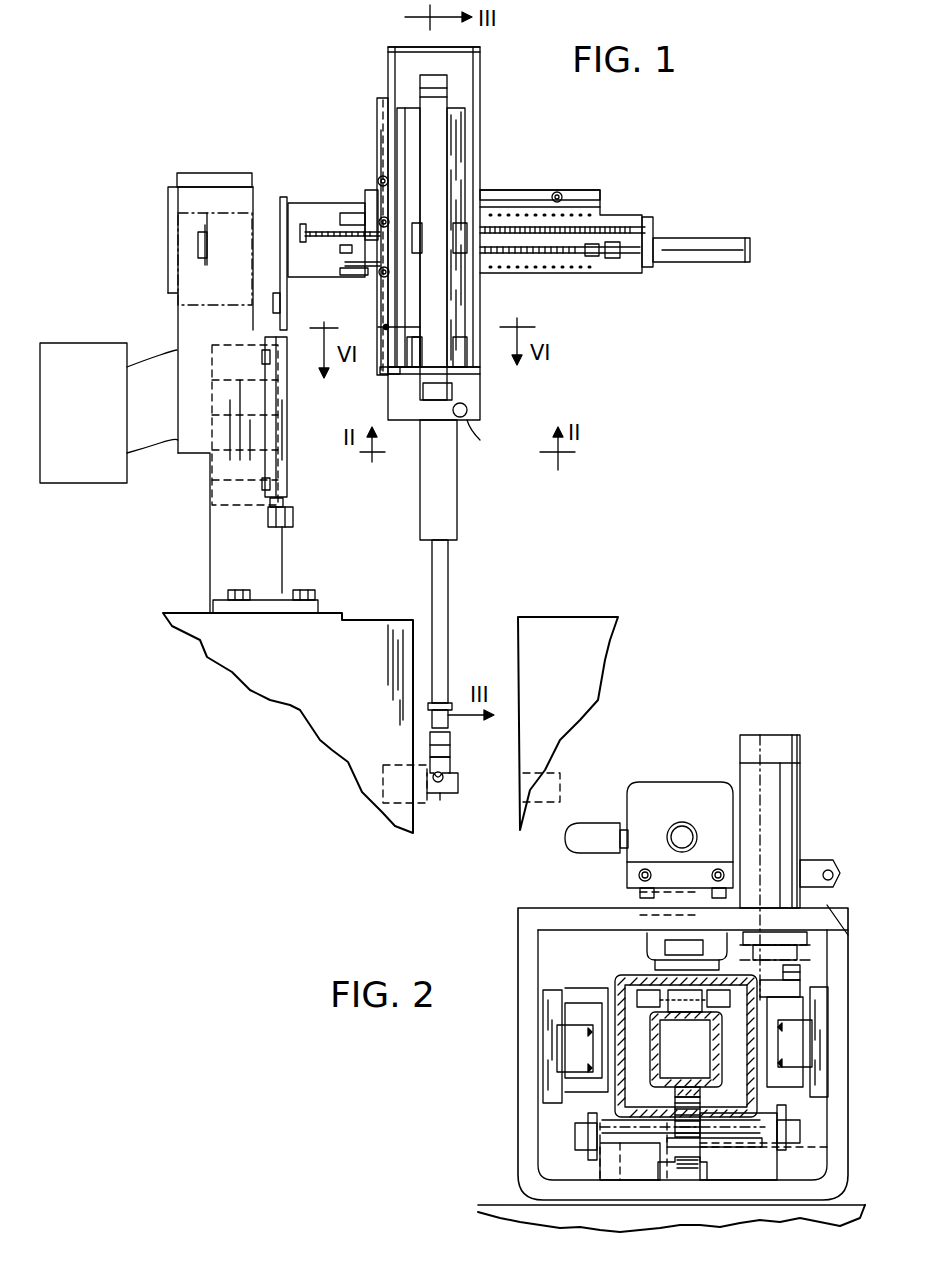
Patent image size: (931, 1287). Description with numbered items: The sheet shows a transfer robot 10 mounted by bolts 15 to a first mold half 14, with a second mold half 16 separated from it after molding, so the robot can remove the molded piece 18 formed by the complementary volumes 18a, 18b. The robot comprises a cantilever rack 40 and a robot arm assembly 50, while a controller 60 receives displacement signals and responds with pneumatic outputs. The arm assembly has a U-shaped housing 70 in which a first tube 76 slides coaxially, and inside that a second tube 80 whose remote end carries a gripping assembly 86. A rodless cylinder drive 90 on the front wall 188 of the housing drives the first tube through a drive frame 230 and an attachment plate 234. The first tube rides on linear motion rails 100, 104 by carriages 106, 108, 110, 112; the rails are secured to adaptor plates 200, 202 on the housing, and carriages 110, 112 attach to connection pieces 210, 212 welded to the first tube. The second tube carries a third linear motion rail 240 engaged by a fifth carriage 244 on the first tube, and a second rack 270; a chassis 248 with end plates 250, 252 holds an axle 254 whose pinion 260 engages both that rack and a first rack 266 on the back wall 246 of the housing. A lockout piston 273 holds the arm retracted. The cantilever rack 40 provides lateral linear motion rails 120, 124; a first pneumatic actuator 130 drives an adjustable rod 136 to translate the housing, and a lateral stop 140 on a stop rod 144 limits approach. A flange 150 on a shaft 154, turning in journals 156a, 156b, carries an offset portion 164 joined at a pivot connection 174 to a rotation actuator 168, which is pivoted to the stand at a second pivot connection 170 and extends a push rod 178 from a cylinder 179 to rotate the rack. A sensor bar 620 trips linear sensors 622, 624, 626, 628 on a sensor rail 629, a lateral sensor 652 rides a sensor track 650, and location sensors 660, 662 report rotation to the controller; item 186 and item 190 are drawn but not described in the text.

In FIG. 1, the transfer robot 10 is at (190, 100).
In FIG. 1, the first mold half 14 is at (340, 613).
In FIG. 1, the bolts 15 is at (215, 590).
In FIG. 1, the second mold half 16 is at (575, 617).
In FIG. 1, the molded piece 18 is at (445, 795).
In FIG. 1, the complementary volume 18a is at (400, 765).
In FIG. 1, the complementary volume 18b is at (530, 768).
In FIG. 1, the cantilever rack 40 is at (612, 178).
In FIG. 1, the robot arm assembly 50 is at (480, 118).
In FIG. 1, the controller 60 is at (82, 343).
In FIG. 1, the housing 70 is at (480, 55).
In FIG. 2, the housing 70 is at (848, 1065).
In FIG. 1, the first tube 76 is at (457, 487).
In FIG. 2, the first tube 76 is at (620, 975).
In FIG. 1, the second tube 80 is at (448, 600).
In FIG. 2, the second tube 80 is at (620, 1110).
In FIG. 1, the gripping assembly 86 is at (450, 742).
In FIG. 1, the rodless cylinder drive 90 is at (440, 170).
In FIG. 2, the rodless cylinder drive 90 is at (672, 782).
In FIG. 1, the linear motion rail 100 is at (392, 108).
In FIG. 2, the linear motion rail 100 is at (567, 1045).
In FIG. 1, the linear motion rail 104 is at (448, 112).
In FIG. 2, the linear motion rail 104 is at (822, 1030).
In FIG. 1, the carriage 106 is at (405, 240).
In FIG. 1, the carriage 108 is at (467, 245).
In FIG. 1, the carriage 110 is at (396, 393).
In FIG. 2, the carriage 110 is at (575, 1012).
In FIG. 1, the carriage 112 is at (480, 377).
In FIG. 2, the carriage 112 is at (800, 1020).
In FIG. 1, the lateral linear motion rail 120 is at (608, 213).
In FIG. 1, the lateral linear motion rail 124 is at (610, 275).
In FIG. 1, the first pneumatic actuator 130 is at (692, 238).
In FIG. 1, the adjustable rod 136 is at (537, 255).
In FIG. 1, the lateral stop 140 is at (370, 228).
In FIG. 1, the stop rod 144 is at (645, 225).
In FIG. 1, the flange 150 is at (285, 197).
In FIG. 1, the shaft 154 is at (198, 246).
In FIG. 1, the journal 156a is at (175, 228).
In FIG. 1, the journal 156b is at (275, 230).
In FIG. 1, the offset portion 164 is at (290, 278).
In FIG. 1, the rotation actuator 168 is at (298, 455).
In FIG. 1, the second pivot connection 170 is at (293, 518).
In FIG. 1, the pivot connection 174 is at (282, 302).
In FIG. 1, the push rod 178 is at (280, 322).
In FIG. 1, the cylinder 179 is at (287, 395).
In FIG. 1, the connector 186 is at (468, 422).
In FIG. 1, the front wall 188 is at (471, 390).
In FIG. 2, the front wall 188 is at (815, 860).
In FIG. 2, the fastener 190 is at (805, 968).
In FIG. 2, the adaptor plate 200 is at (548, 1073).
In FIG. 2, the adaptor plate 202 is at (830, 1040).
In FIG. 2, the connection piece 210 is at (578, 990).
In FIG. 2, the connection piece 212 is at (798, 985).
In FIG. 2, the drive frame 230 is at (628, 930).
In FIG. 2, the attachment plate 234 is at (620, 952).
In FIG. 2, the third linear motion rail 240 is at (690, 1020).
In FIG. 2, the fifth carriage 244 is at (705, 1080).
In FIG. 2, the back wall 246 is at (562, 1210).
In FIG. 2, the chassis 248 is at (745, 1180).
In FIG. 2, the end plate 250 is at (828, 1200).
In FIG. 2, the end plate 252 is at (540, 1180).
In FIG. 2, the axle 254 is at (786, 1144).
In FIG. 2, the pinion 260 is at (742, 1150).
In FIG. 2, the first rack 266 is at (683, 1182).
In FIG. 2, the second rack 270 is at (650, 1180).
In FIG. 2, the lockout piston 273 is at (800, 778).
In FIG. 1, the sensor bar 620 is at (400, 355).
In FIG. 1, the linear sensor 622 is at (380, 328).
In FIG. 1, the linear sensor 624 is at (382, 276).
In FIG. 1, the linear sensor 626 is at (360, 225).
In FIG. 1, the linear sensor 628 is at (380, 178).
In FIG. 1, the sensor rail 629 is at (380, 122).
In FIG. 1, the sensor track 650 is at (512, 195).
In FIG. 1, the lateral sensor 652 is at (560, 194).
In FIG. 1, the location sensor 660 is at (264, 356).
In FIG. 1, the location sensor 662 is at (262, 484).